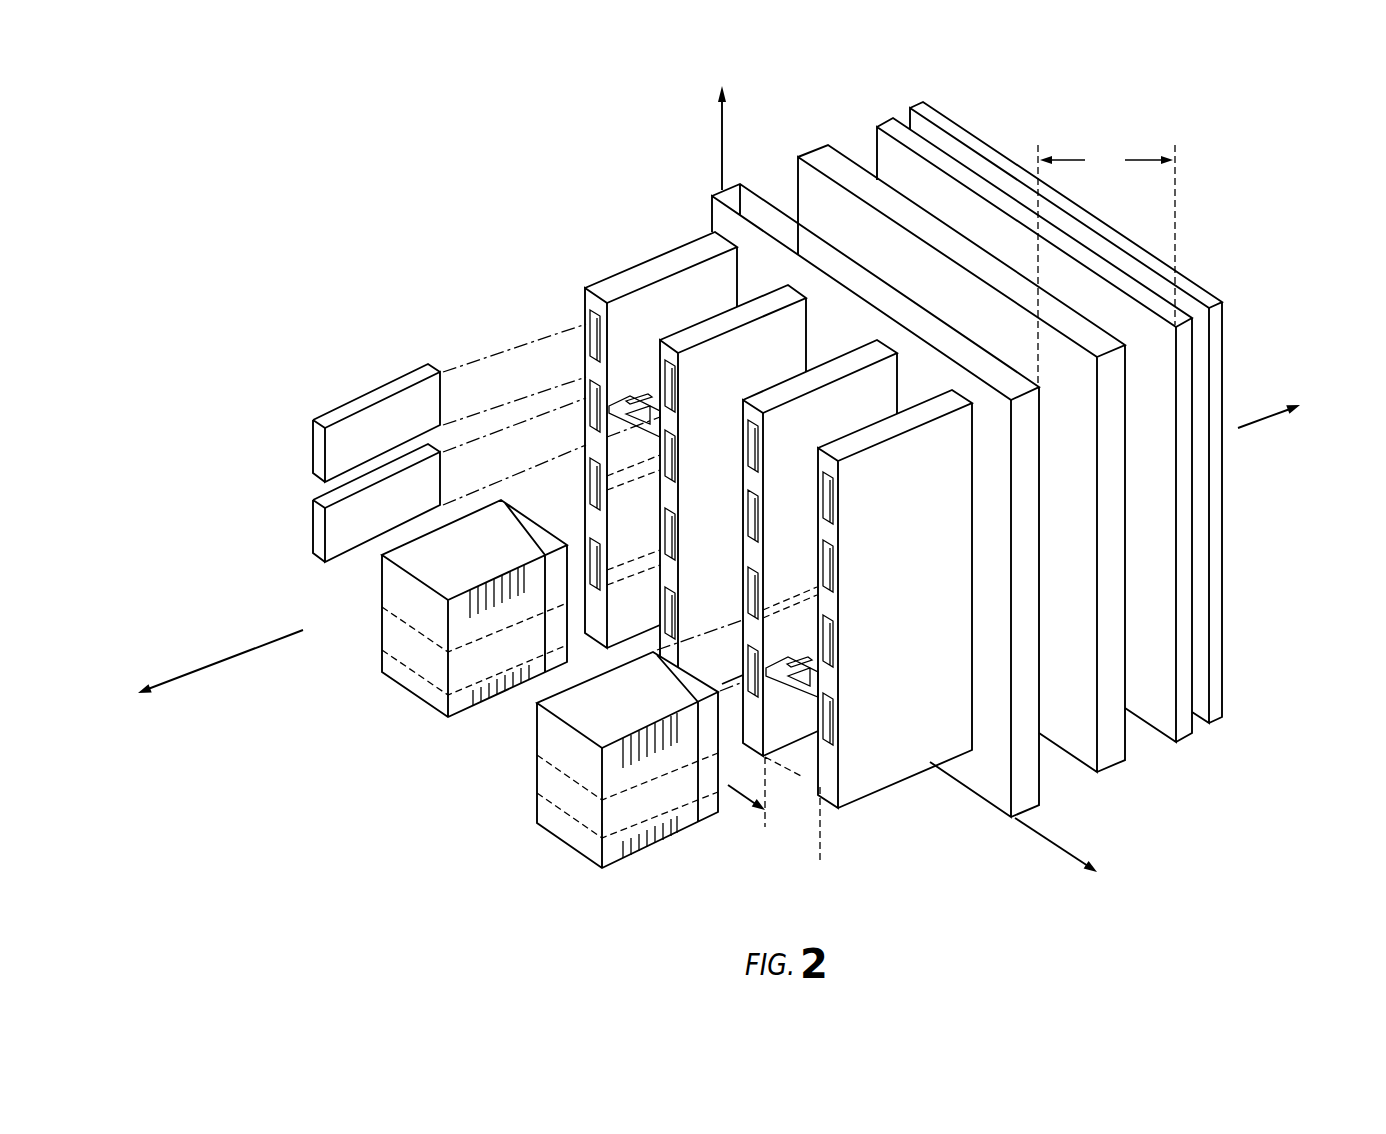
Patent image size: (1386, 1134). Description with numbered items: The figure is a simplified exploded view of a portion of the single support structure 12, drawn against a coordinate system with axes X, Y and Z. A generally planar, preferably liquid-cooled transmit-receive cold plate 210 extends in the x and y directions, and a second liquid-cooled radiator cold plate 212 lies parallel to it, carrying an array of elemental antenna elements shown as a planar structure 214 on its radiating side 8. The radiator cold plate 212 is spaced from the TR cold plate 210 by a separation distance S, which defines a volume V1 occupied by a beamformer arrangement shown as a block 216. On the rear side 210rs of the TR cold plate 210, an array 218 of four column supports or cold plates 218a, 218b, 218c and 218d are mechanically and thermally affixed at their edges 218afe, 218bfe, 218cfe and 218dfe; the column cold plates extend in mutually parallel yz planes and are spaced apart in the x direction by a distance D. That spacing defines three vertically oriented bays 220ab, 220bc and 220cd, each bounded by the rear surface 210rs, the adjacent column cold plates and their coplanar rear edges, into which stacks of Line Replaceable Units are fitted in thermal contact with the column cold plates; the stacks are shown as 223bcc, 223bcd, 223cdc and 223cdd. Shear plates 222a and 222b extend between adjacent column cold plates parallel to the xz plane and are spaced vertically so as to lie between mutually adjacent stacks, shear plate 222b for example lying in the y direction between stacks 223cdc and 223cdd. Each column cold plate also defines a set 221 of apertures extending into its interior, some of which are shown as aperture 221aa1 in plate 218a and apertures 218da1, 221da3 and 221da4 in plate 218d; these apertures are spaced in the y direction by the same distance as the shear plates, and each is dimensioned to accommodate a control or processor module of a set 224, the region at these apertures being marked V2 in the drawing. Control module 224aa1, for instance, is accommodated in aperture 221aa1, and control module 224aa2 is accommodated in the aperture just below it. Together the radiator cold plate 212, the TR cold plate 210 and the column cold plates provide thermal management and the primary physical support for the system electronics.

The radiating side 8 is at (1291, 459).
The phased array antenna system 12 is at (681, 912).
The TR cold plate 210 is at (1030, 818).
The rear side of TR cold plate 210rs is at (990, 723).
The radiator cold plate 212 is at (1180, 742).
The array of elemental antenna elements 214 is at (1217, 723).
The beamformer arrangement 216 is at (1113, 760).
The array of column supports or cold plates 218 is at (574, 181).
The column support or cold plate 218a is at (606, 288).
The column support or cold plate 218b is at (712, 330).
The column support or cold plate 218c is at (778, 393).
The column support or cold plate 218d is at (921, 778).
The edge of column cold plate 218a 218afe is at (728, 233).
The edge of column cold plate 218b 218bfe is at (802, 287).
The edge of column cold plate 218c 218cfe is at (893, 355).
The edge of column cold plate 218d 218dfe is at (966, 506).
The slot in panel 218d 218da1 is at (826, 508).
The vertically oriented bay 220ab is at (712, 272).
The vertically oriented bay 220bc is at (789, 335).
The vertically oriented bay 220cd is at (887, 410).
The set of apertures 221 is at (370, 300).
The aperture 221aa1 is at (583, 333).
The aperture 221da3 is at (827, 645).
The aperture 221da4 is at (818, 736).
The shear plate 222a is at (618, 408).
The shear plate 222b is at (836, 686).
The stack of LRUs 223bcc is at (382, 602).
The stack of Line Replaceable Units 223bcd is at (408, 680).
The stack of Line Replaceable Units 223cdc is at (540, 737).
The stack of Line Replaceable Units 223cdd is at (535, 818).
The set of control or processor modules 224 is at (287, 294).
The control module 224aa1 is at (367, 398).
The control module 224aa2 is at (315, 545).
The volume V1 is at (853, 141).
The volume V2 is at (752, 453).
The separation distance S is at (1106, 265).
The distance D is at (774, 810).
The x axis X is at (1066, 856).
The y axis Y is at (714, 129).
The z axis Z is at (211, 673).